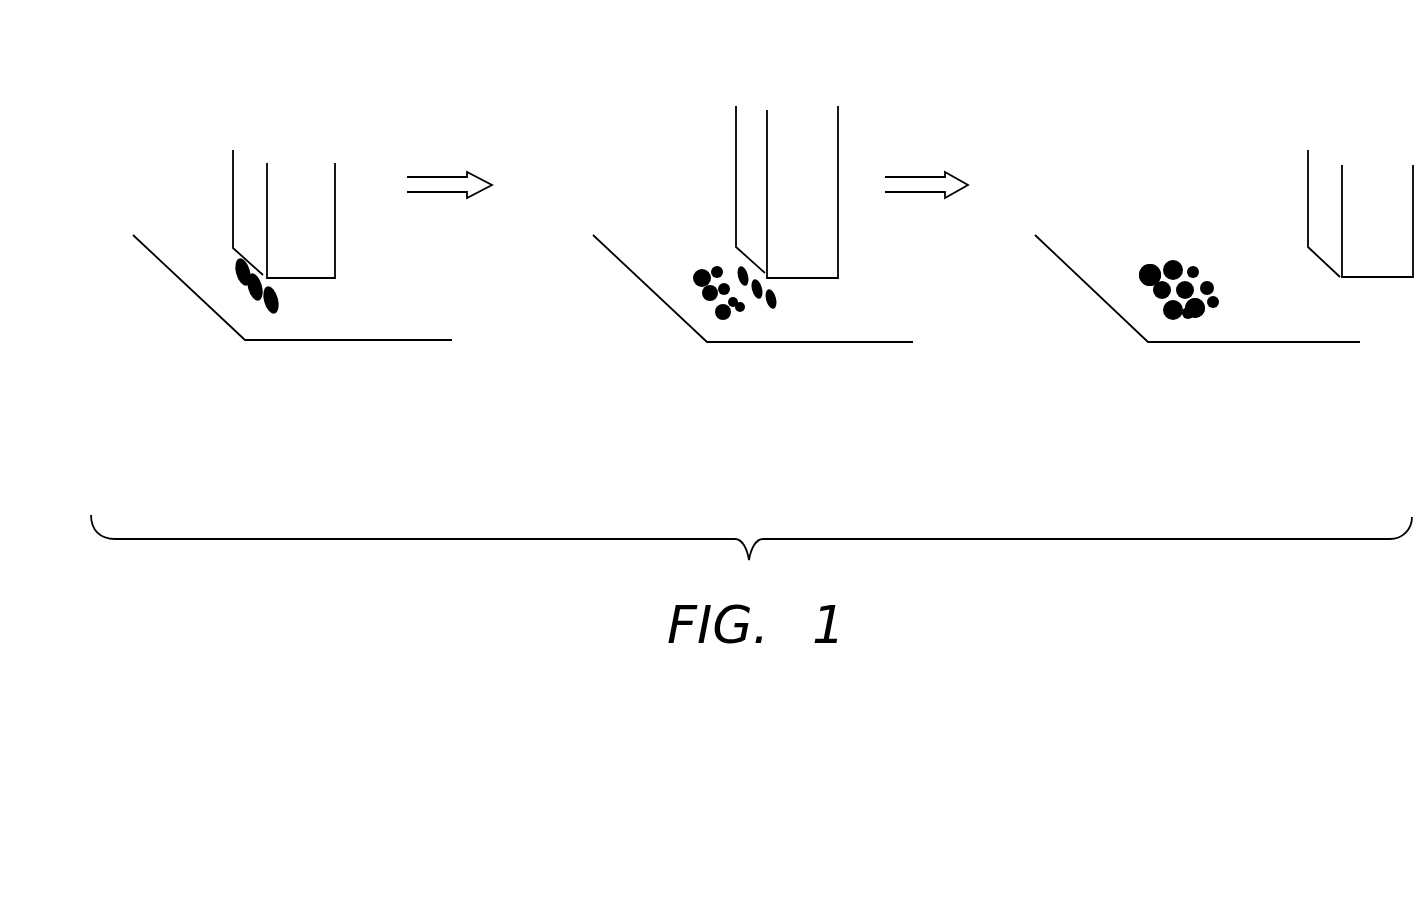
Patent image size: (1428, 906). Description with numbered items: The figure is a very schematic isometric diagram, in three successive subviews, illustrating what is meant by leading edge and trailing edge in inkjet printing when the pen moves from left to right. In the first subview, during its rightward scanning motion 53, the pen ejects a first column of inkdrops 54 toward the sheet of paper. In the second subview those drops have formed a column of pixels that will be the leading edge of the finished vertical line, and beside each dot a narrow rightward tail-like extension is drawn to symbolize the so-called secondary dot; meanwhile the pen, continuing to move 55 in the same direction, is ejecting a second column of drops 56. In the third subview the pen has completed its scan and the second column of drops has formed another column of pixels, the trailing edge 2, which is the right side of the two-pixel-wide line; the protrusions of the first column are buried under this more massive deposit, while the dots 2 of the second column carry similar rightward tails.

The trailing edge 2 is at (1167, 257).
The rightward scanning motion 53 is at (445, 177).
The first column of inkdrops 54 is at (285, 307).
The continued rightward movement 55 is at (922, 178).
The second column of drops 56 is at (792, 310).